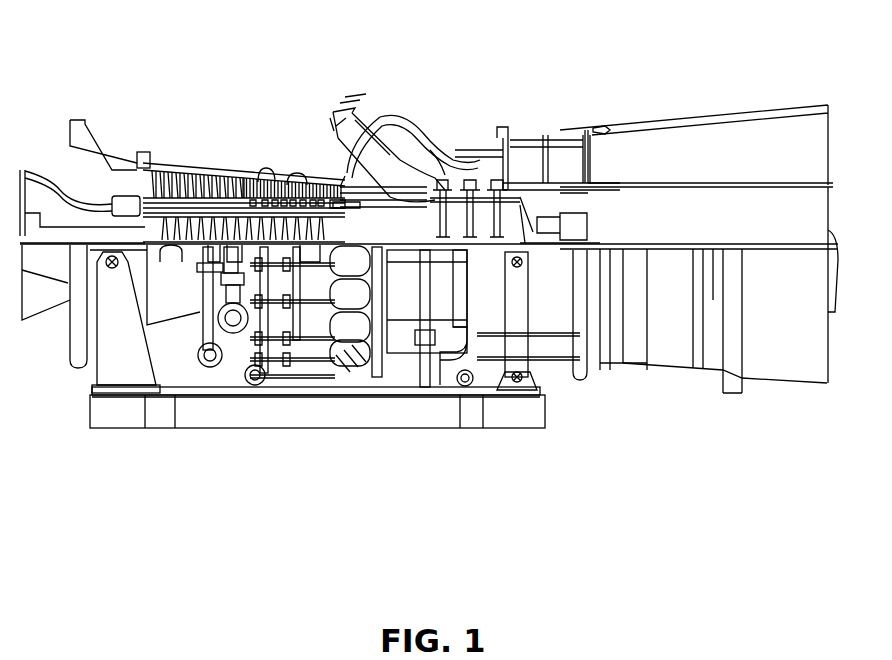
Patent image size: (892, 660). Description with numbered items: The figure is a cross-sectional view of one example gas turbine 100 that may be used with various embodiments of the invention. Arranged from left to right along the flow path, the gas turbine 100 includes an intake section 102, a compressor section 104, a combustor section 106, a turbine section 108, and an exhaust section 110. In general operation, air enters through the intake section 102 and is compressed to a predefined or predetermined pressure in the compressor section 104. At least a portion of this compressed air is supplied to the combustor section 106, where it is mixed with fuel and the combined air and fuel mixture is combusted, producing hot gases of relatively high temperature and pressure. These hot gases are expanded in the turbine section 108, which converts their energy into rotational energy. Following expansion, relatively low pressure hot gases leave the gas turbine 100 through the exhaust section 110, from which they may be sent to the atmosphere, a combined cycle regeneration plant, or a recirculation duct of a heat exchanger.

The gas turbine 100 is at (429, 294).
The intake section 102 is at (50, 180).
The compressor section 104 is at (200, 210).
The combustor section 106 is at (365, 138).
The turbine section 108 is at (463, 190).
The exhaust section 110 is at (835, 127).